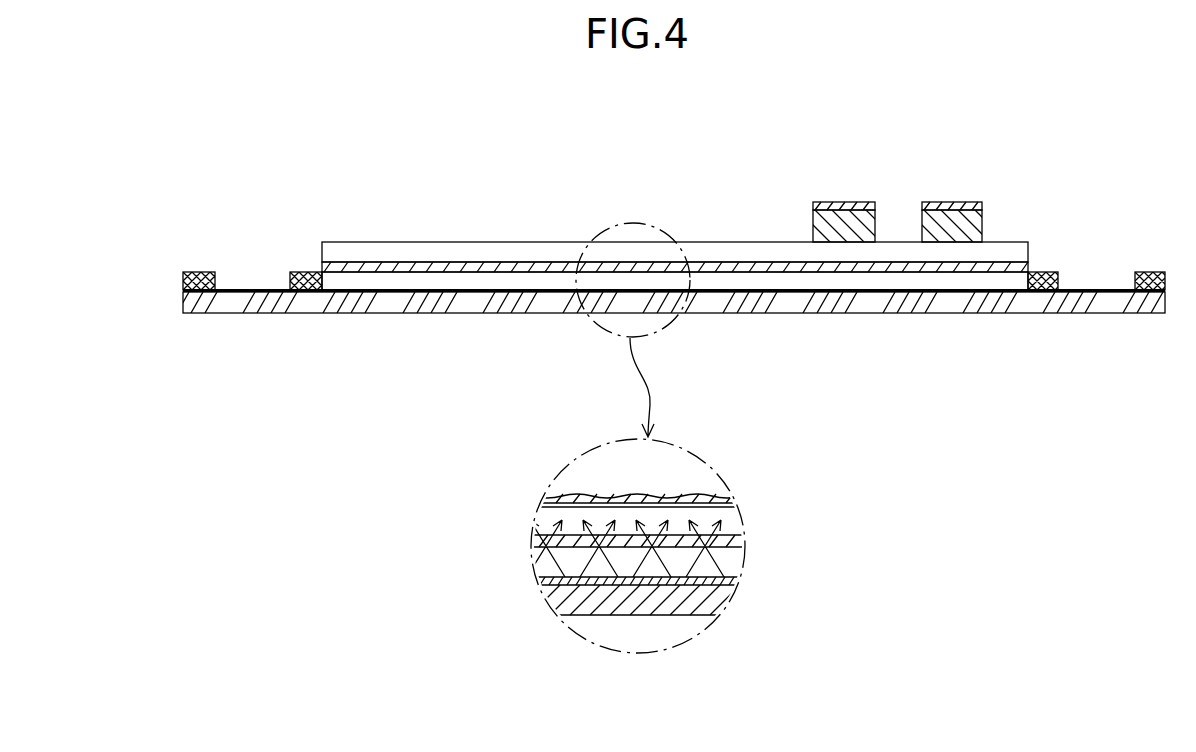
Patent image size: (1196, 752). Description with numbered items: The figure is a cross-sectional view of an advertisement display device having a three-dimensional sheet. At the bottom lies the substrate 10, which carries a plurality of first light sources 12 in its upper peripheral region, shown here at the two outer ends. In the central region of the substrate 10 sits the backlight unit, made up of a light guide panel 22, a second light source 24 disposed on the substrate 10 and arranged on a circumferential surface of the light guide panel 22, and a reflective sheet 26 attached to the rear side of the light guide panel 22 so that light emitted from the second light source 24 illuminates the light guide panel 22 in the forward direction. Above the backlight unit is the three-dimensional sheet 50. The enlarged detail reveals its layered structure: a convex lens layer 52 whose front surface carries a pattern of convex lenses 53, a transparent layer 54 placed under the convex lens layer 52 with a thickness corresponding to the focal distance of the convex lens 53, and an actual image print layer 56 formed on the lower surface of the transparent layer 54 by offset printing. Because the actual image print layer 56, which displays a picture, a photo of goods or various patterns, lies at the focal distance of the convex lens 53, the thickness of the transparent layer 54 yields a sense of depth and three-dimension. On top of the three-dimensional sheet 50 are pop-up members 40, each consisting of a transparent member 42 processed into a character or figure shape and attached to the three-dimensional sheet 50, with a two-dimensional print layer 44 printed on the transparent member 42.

The substrate 10 is at (1045, 307).
The first light source 12 is at (200, 270).
The light guide panel 22 is at (740, 563).
The second light source 24 is at (298, 270).
The reflective sheet 26 is at (735, 587).
The pop-up member 40 is at (992, 140).
The transparent member 42 is at (932, 215).
The 2D print layer 44 is at (965, 205).
The 3D sheet 50 is at (816, 410).
The convex lens layer 52 is at (710, 503).
The convex lens 53 is at (705, 496).
The transparent layer 54 is at (735, 520).
The actual image print layer 56 is at (740, 538).